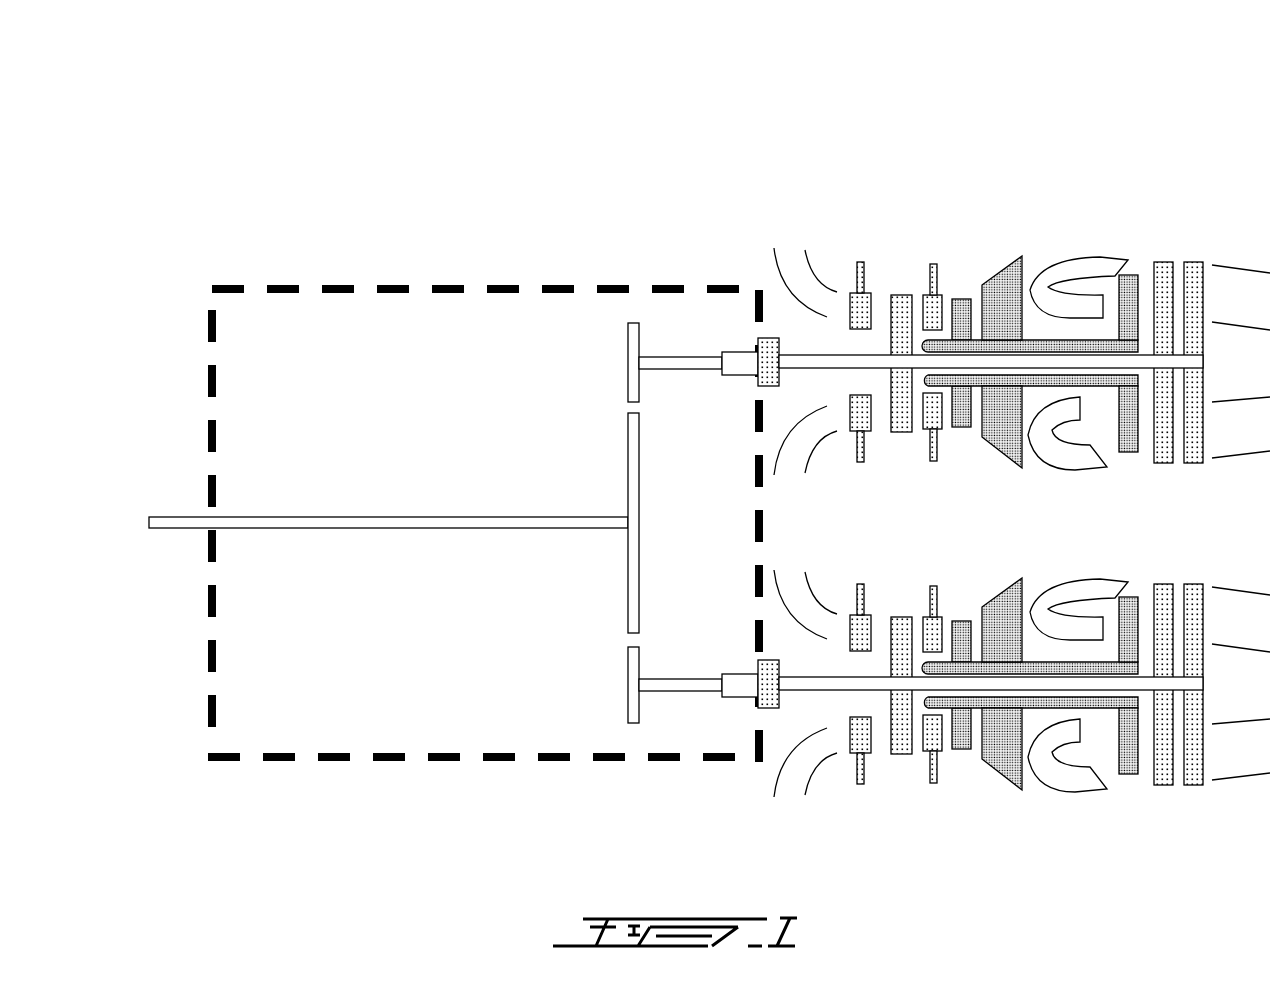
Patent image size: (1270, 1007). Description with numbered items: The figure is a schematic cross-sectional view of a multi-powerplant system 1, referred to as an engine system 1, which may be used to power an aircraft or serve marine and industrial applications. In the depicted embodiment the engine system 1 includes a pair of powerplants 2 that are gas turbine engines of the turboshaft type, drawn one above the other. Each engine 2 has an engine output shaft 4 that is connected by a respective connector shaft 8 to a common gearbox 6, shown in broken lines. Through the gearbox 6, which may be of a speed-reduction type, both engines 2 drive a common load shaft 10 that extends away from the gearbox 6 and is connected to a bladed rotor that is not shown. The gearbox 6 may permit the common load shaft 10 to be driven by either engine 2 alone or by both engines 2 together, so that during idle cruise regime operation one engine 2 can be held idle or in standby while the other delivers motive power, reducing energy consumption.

The multi-powerplant system 1 is at (760, 118).
The powerplant 2 is at (1089, 258).
The engine output shaft 4 is at (808, 355).
The common gearbox 6 is at (446, 286).
The connector shaft 8 is at (681, 356).
The common load shaft 10 is at (176, 517).